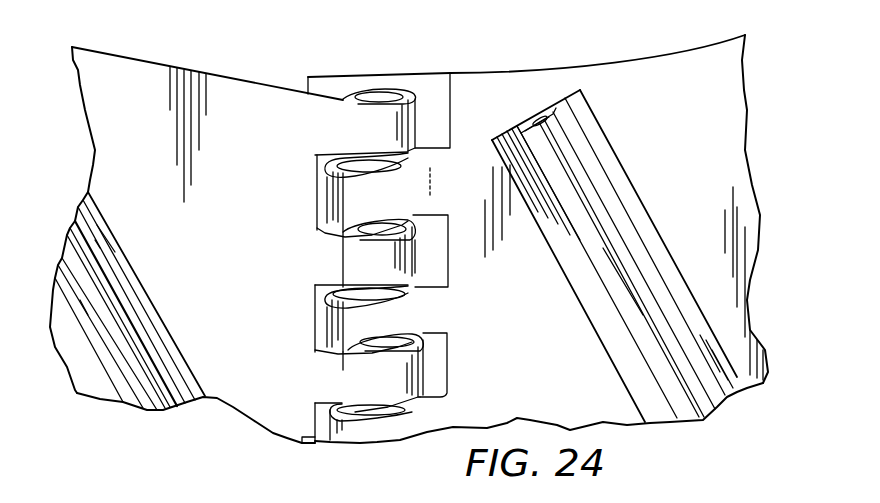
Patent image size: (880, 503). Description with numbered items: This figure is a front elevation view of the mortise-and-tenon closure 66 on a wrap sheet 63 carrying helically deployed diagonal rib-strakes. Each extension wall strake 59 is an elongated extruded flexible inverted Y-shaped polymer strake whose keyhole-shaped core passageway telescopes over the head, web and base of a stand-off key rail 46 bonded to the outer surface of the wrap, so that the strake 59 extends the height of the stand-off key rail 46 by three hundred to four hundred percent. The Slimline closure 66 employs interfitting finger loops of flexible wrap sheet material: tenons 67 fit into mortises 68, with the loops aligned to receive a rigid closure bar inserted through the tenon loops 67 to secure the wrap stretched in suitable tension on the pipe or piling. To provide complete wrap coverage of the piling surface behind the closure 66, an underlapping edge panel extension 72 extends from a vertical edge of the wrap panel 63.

The stand-off key rail 46 is at (538, 104).
The extension wall strake 59 is at (127, 330).
The wrap sheet 63 is at (708, 167).
The mortise-and-tenon closure 66 is at (460, 63).
The tenon loops 67 is at (380, 144).
The mortises 68 is at (316, 226).
The underlapping edge panel extension 72 is at (433, 113).